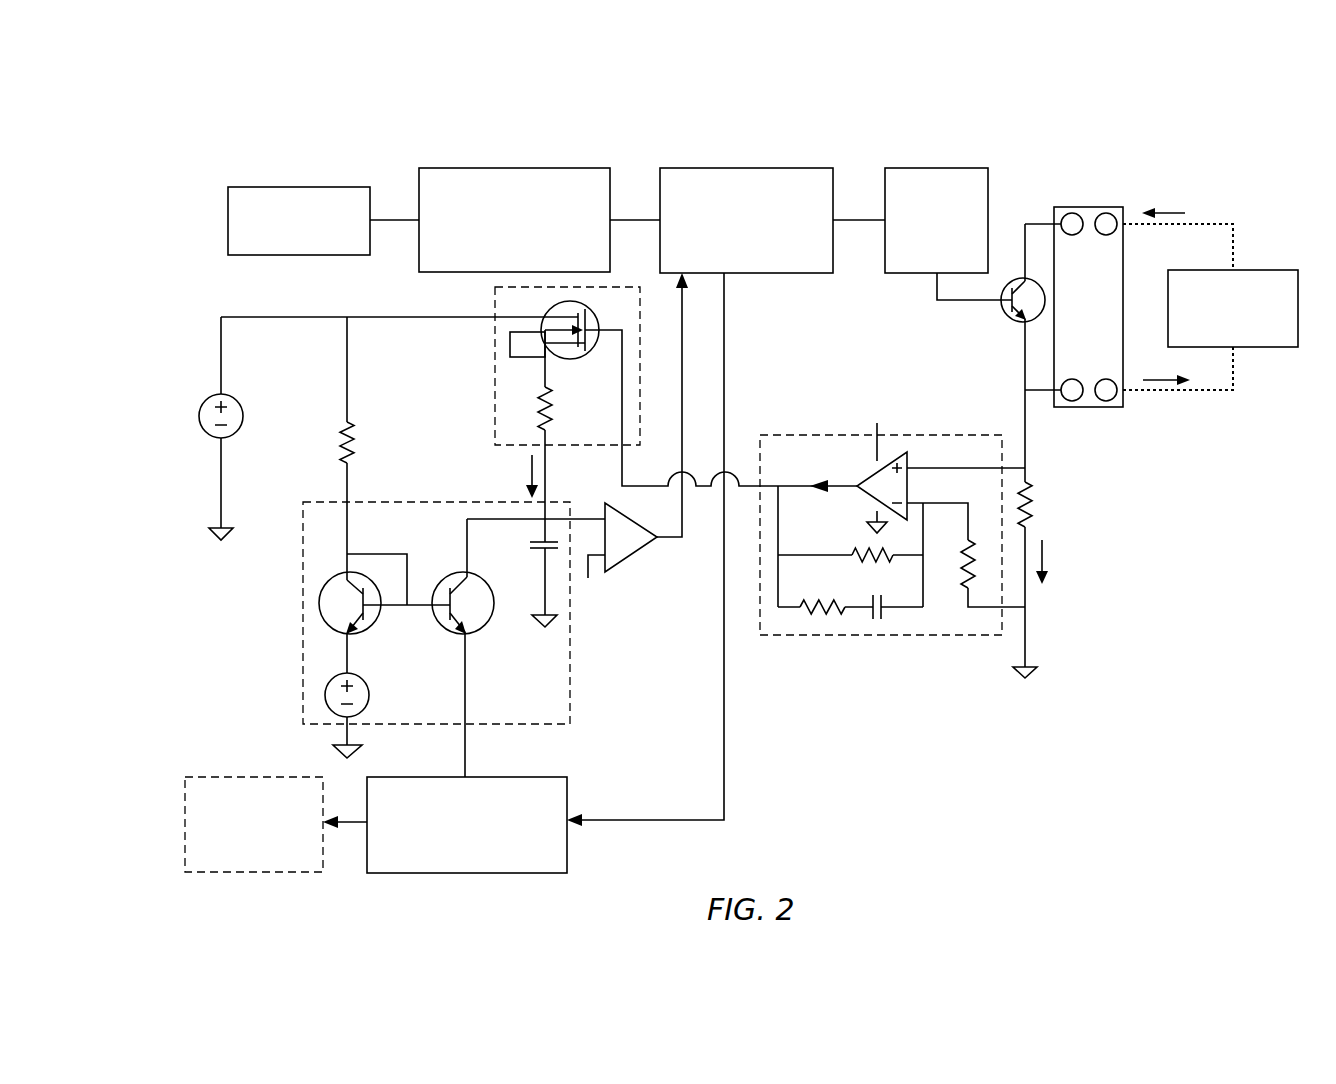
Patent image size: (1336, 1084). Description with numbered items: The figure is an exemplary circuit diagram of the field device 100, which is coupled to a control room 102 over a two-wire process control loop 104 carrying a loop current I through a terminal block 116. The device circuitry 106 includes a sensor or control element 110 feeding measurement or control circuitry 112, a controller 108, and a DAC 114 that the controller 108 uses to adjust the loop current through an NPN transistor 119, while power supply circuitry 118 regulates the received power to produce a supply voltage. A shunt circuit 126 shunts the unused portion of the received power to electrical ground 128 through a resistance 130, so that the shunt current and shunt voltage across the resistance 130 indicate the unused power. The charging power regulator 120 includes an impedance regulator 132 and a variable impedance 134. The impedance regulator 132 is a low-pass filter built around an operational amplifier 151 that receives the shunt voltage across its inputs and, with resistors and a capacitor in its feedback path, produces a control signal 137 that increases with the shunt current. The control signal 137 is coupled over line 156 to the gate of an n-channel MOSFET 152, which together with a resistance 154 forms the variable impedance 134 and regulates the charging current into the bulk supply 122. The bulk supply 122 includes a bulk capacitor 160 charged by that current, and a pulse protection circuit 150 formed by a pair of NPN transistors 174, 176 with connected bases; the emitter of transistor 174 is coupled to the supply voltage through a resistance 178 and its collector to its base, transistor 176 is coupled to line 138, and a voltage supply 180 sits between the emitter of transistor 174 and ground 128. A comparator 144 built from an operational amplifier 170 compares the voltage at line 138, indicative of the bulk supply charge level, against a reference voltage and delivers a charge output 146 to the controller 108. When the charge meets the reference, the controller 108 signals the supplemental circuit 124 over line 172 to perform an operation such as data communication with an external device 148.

The field device 100 is at (228, 116).
The control room 102 is at (1263, 270).
The two-wire process control loop 104 is at (1230, 222).
The device circuitry 106 is at (1012, 134).
The controller 108 is at (687, 168).
The sensor or control element 110 is at (240, 187).
The measurement or control circuitry 112 is at (443, 168).
The digital-to-analog converter (DAC) 114 is at (912, 168).
The terminal block 116 is at (1097, 207).
The power supply circuitry 118 is at (173, 371).
The NPN transistor 119 is at (1003, 313).
The charging power regulator 120 is at (957, 691).
The bulk supply 122 is at (303, 638).
The supplemental circuit 124 is at (552, 778).
The shunt circuit 126 is at (1110, 565).
The electrical ground 128 is at (218, 543).
The resistance 130 is at (1037, 513).
The impedance regulator 132 is at (795, 435).
The variable impedance 134 is at (495, 375).
The control signal 137 is at (836, 484).
The line 138 is at (548, 478).
The comparator 144 is at (645, 611).
The charge output 146 is at (682, 510).
The external device 148 is at (203, 777).
The pulse protection circuit 150 is at (320, 536).
The operational amplifier 151 is at (908, 462).
The n-channel MOSFET 152 is at (577, 360).
The resistance 154 is at (537, 403).
The line 156 is at (624, 465).
The bulk capacitor 160 is at (530, 542).
The operational amplifier 170 is at (627, 550).
The line 172 is at (724, 760).
The NPN transistor 174 is at (332, 593).
The NPN transistor 176 is at (480, 625).
The resistance 178 is at (340, 432).
The voltage supply 180 is at (327, 687).